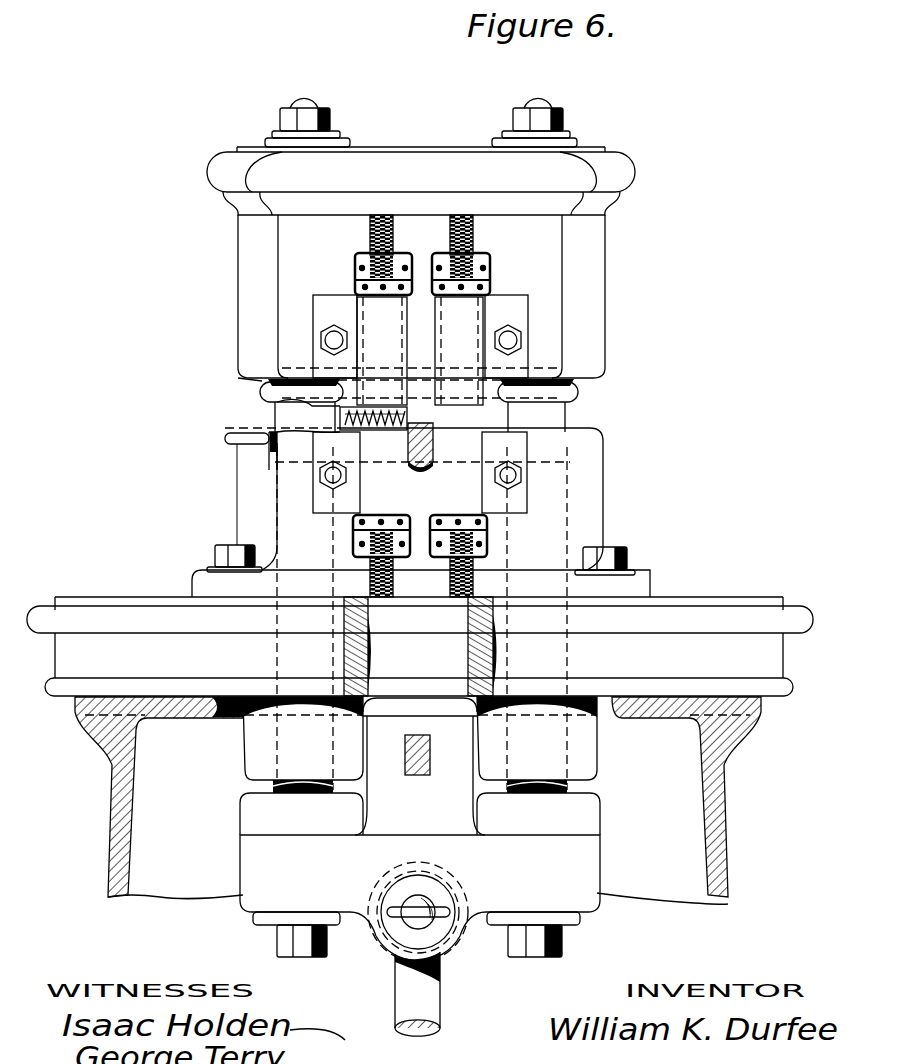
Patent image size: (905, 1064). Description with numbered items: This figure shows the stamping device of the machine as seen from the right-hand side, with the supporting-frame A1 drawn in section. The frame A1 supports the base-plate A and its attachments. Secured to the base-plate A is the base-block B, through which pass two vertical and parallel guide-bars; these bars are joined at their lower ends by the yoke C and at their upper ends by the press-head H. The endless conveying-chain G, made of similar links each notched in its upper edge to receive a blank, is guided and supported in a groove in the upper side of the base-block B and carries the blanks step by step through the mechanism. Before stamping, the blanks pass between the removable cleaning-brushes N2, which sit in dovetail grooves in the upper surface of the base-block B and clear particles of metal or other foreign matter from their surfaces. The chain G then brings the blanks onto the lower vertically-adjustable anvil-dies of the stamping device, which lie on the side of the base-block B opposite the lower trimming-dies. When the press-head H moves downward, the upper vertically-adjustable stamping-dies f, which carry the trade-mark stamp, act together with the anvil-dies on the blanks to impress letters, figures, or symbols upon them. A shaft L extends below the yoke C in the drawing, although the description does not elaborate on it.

The press-head H is at (421, 265).
The upper vertically-adjustable stamping-dies f is at (420, 351).
The removable cleaning-brushes N2 is at (342, 415).
The endless conveying-chain G is at (428, 599).
The base-block B is at (421, 631).
The base-plate A is at (420, 646).
The frame A1 is at (418, 800).
The yoke C is at (420, 898).
The shaft L is at (417, 994).